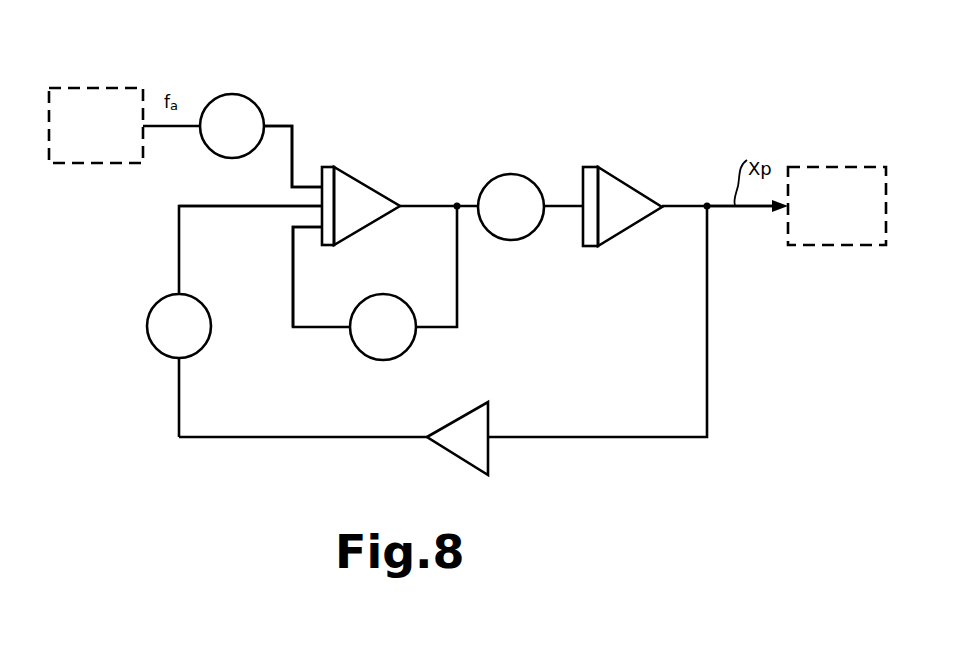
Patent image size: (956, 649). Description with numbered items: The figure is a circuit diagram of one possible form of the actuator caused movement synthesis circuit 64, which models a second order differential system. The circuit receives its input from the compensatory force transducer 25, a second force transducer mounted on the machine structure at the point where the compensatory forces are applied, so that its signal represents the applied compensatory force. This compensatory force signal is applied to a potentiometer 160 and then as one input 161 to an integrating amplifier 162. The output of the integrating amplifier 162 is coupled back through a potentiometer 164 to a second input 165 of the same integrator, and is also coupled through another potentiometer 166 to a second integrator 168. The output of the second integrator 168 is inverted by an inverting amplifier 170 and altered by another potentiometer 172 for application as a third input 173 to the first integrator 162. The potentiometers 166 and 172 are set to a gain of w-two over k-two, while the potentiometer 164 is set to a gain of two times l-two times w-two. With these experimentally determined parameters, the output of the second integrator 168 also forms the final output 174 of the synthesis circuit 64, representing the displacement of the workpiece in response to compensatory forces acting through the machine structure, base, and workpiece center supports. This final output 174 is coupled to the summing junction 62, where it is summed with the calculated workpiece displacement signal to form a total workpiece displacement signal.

The second force transducer 25 is at (95, 88).
The potentiometer 160 is at (241, 97).
The first input 161 is at (293, 150).
The integrating amplifier 162 is at (364, 184).
The potentiometer 164 is at (388, 295).
The second input 165 is at (292, 270).
The potentiometer 166 is at (520, 175).
The second integrator 168 is at (630, 186).
The inverting amplifier 170 is at (489, 403).
The potentiometer 172 is at (147, 333).
The third input 173 is at (232, 207).
The final output 174 is at (750, 209).
The actuator caused movement synthesis circuit 64 is at (722, 132).
The summing junction 62 is at (841, 167).